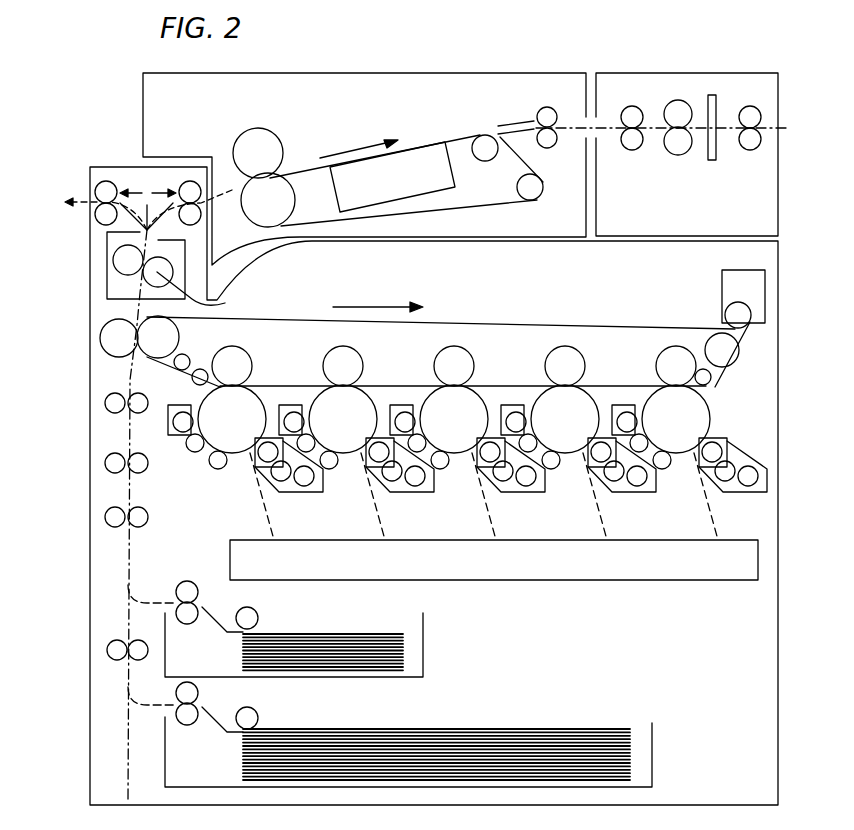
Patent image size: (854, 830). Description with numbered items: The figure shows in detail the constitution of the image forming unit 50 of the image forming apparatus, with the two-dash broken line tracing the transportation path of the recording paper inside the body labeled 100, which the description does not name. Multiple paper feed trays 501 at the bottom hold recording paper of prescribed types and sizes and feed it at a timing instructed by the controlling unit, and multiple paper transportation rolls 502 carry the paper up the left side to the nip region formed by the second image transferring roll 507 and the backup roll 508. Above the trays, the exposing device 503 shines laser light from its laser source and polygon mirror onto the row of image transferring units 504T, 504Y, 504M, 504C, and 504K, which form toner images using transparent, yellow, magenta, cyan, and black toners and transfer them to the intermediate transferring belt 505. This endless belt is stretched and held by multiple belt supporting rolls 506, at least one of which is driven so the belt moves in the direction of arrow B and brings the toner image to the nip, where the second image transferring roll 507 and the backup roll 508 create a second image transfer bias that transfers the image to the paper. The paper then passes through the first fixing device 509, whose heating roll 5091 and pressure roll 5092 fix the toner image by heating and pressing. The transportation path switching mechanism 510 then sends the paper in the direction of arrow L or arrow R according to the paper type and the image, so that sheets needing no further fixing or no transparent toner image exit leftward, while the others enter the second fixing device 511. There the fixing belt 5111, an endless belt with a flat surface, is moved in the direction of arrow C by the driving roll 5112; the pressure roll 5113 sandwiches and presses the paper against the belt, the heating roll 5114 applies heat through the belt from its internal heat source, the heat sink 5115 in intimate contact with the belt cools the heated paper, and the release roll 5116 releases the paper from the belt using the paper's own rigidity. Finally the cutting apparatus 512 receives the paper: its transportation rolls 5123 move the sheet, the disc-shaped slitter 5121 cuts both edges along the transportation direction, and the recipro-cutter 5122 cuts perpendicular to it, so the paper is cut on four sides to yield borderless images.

The image forming unit 50 is at (98, 97).
The main body 100 is at (78, 577).
The paper feed tray 501 is at (423, 642).
The paper transportation roll 502 is at (105, 403).
The exposing device 503 is at (616, 566).
The image transferring unit 504K is at (245, 443).
The image transferring unit 504C is at (356, 443).
The image transferring unit 504M is at (467, 443).
The image transferring unit 504Y is at (578, 443).
The image transferring unit 504T is at (689, 443).
The intermediate transferring belt 505 is at (513, 327).
The belt supporting roll 506 is at (185, 356).
The second image transferring roll 507 is at (112, 352).
The backup roll 508 is at (147, 330).
The first fixing device 509 is at (105, 280).
The heating roll 5091 is at (223, 292).
The pressure roll 5092 is at (115, 252).
The transportation path switching mechanism 510 is at (145, 183).
The second fixing device 511 is at (484, 73).
The fixing belt 5111 is at (303, 168).
The driving roll 5112 is at (535, 192).
The pressure roll 5113 is at (245, 140).
The heating roll 5114 is at (255, 205).
The heat sink 5115 is at (422, 158).
The release roll 5116 is at (483, 141).
The cutting apparatus 512 is at (612, 73).
The slitter 5121 is at (677, 101).
The recipro-cutter 5122 is at (714, 160).
The transportation roll 5123 is at (749, 106).